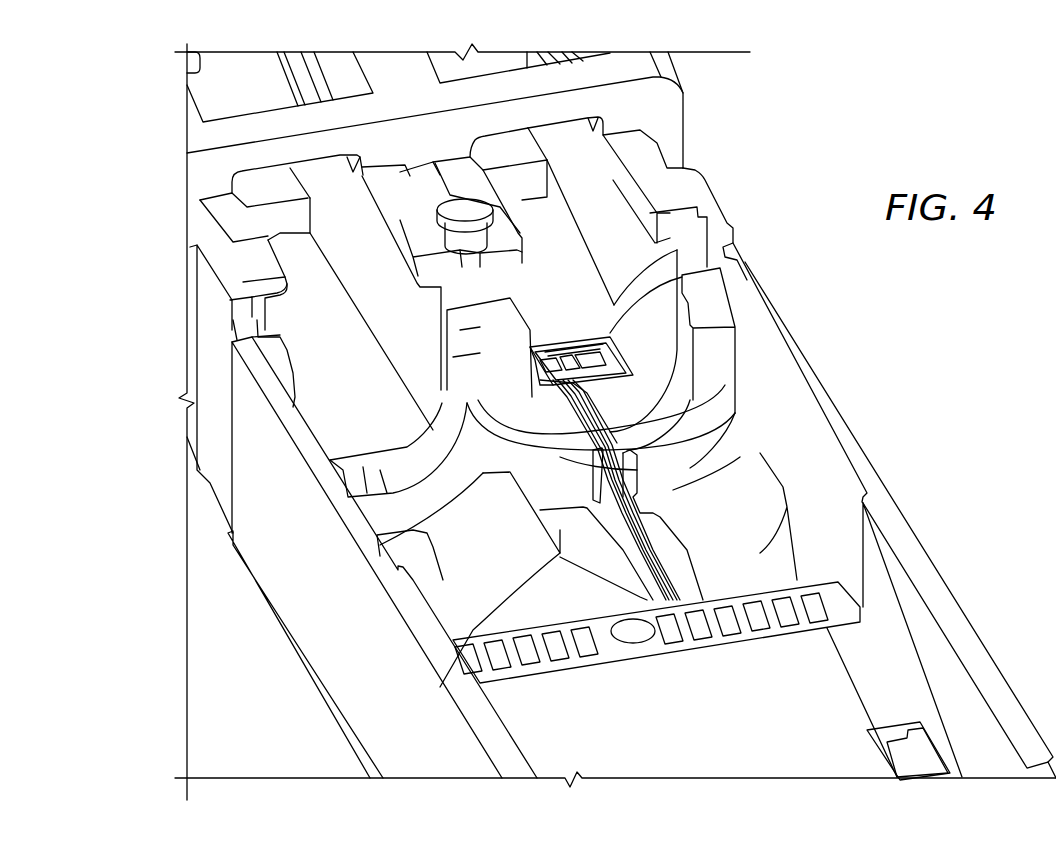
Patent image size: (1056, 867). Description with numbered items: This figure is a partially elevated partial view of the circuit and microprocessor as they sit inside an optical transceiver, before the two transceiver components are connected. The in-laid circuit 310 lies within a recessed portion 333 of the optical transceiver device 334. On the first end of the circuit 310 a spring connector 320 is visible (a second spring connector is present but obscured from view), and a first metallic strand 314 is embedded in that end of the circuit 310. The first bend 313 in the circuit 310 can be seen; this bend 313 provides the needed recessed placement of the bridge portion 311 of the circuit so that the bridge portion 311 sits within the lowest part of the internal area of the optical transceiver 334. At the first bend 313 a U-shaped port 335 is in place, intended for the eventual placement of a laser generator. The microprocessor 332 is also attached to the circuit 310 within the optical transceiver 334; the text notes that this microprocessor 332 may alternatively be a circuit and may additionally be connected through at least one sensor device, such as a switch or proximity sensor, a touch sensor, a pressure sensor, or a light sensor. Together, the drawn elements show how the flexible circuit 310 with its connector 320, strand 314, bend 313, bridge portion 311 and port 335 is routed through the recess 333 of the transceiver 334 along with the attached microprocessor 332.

The circuit 310 is at (600, 352).
The bridge portion 311 is at (650, 545).
The first bend 313 is at (640, 495).
The first metallic strand 314 is at (612, 382).
The spring connector 320 is at (548, 380).
The microprocessor 332 is at (850, 660).
The recessed portion 333 is at (590, 340).
The optical transceiver device 334 is at (806, 365).
The U-shaped port 335 is at (640, 430).